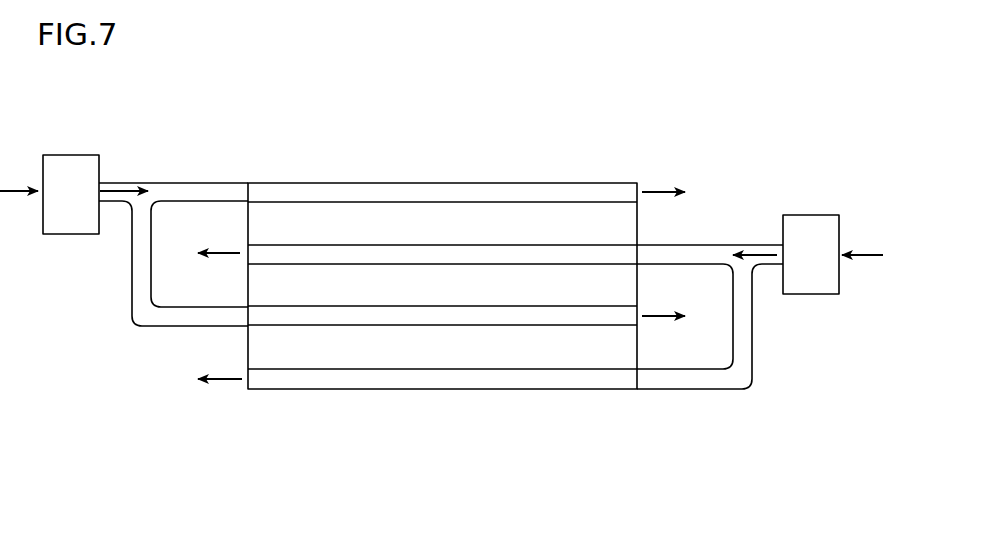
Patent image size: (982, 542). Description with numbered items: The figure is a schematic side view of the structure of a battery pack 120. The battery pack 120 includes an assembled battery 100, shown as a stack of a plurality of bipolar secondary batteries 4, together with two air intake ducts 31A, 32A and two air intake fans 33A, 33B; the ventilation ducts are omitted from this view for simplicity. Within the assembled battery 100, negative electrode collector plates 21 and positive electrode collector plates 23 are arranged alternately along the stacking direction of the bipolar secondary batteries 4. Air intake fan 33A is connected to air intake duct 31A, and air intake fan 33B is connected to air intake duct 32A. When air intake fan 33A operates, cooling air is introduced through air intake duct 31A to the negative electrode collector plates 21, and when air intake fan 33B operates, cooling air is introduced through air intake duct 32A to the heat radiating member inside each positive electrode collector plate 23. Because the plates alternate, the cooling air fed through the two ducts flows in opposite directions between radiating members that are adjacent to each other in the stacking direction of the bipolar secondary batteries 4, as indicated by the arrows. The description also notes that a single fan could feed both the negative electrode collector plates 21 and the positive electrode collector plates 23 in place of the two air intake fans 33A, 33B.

The battery pack 120 is at (796, 82).
The assembled battery 100 is at (243, 449).
The bipolar secondary battery 4 is at (623, 229).
The negative electrode collector plate 21 is at (430, 192).
The positive electrode collector plate 23 is at (477, 255).
The air intake duct 31A is at (145, 183).
The air intake duct 32A is at (737, 245).
The air intake fan 33A is at (69, 155).
The air intake fan 33B is at (813, 215).